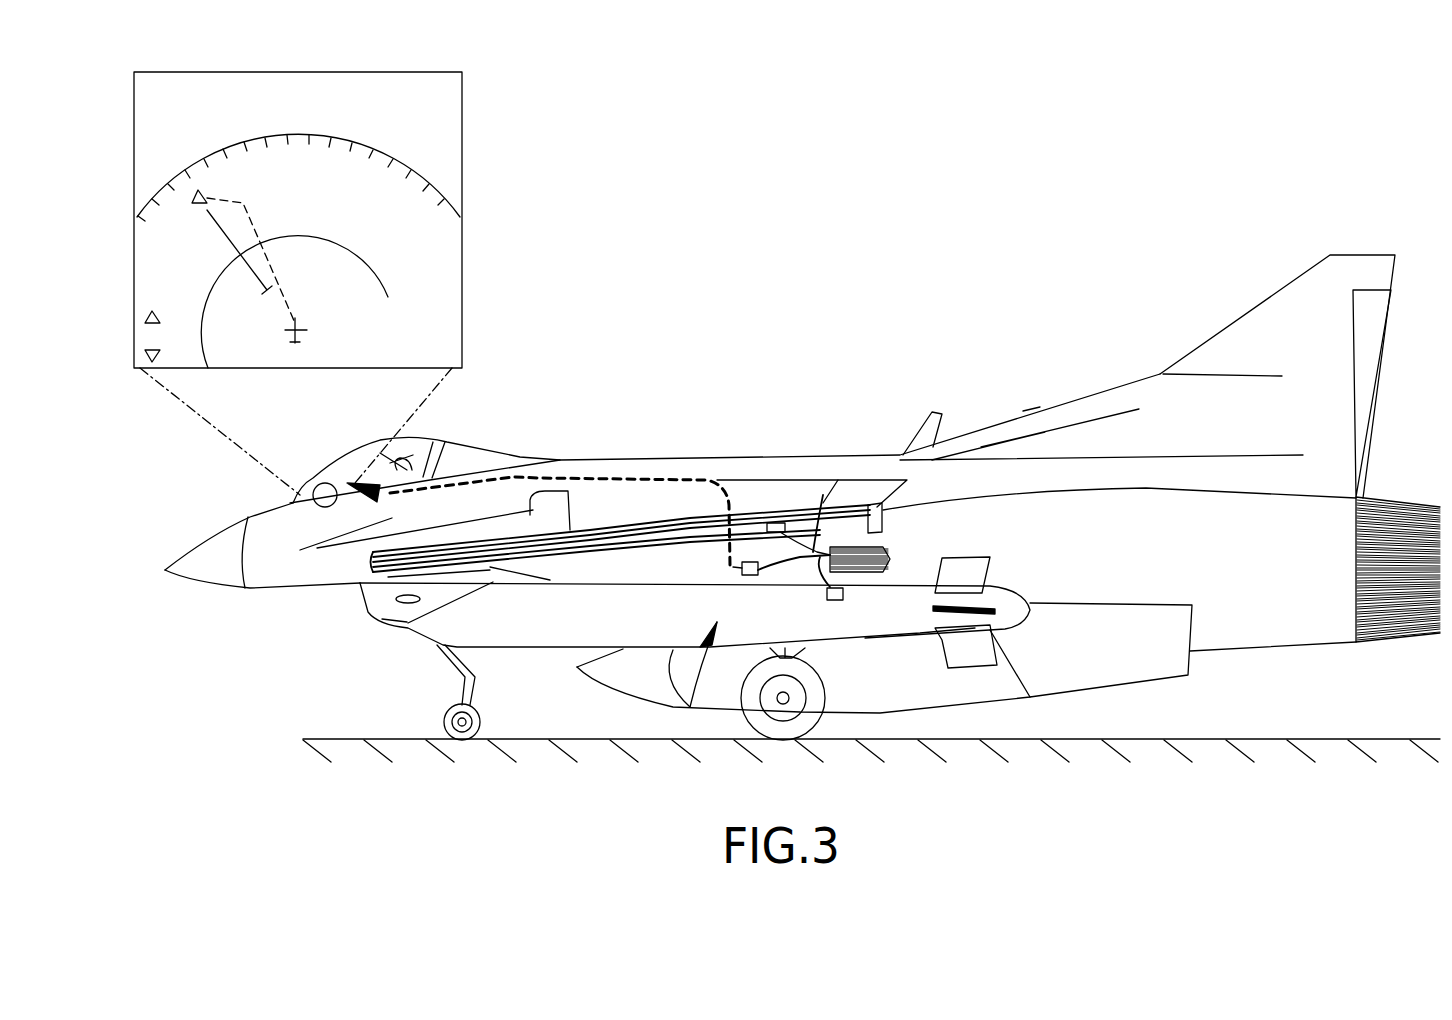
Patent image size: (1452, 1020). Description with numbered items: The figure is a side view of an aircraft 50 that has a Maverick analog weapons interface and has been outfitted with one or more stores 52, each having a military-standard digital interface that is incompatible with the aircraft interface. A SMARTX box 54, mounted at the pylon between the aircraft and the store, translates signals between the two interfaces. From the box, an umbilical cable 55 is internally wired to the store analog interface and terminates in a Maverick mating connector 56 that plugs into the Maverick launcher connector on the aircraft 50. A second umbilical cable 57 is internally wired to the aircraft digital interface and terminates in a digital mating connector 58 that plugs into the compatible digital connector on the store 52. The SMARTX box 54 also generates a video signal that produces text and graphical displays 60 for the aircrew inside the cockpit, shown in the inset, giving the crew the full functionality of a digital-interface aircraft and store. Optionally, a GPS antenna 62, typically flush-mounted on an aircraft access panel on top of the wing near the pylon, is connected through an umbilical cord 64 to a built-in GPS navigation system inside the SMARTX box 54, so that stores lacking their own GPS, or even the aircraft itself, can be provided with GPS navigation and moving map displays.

The aircraft 50 is at (802, 498).
The store 52 is at (690, 707).
The SMARTX box 54 is at (891, 551).
The umbilical cable 55 is at (767, 578).
The AGM-65 mating connector 56 is at (740, 570).
The umbilical cable 57 is at (813, 580).
The MIL-STD-1760 mating connector 58 is at (843, 598).
The text and graphical displays 60 is at (462, 119).
The GPS antenna 62 is at (783, 523).
The umbilical cord 64 is at (823, 495).